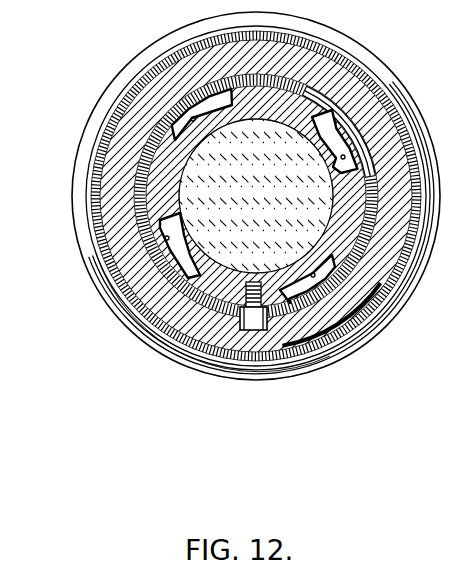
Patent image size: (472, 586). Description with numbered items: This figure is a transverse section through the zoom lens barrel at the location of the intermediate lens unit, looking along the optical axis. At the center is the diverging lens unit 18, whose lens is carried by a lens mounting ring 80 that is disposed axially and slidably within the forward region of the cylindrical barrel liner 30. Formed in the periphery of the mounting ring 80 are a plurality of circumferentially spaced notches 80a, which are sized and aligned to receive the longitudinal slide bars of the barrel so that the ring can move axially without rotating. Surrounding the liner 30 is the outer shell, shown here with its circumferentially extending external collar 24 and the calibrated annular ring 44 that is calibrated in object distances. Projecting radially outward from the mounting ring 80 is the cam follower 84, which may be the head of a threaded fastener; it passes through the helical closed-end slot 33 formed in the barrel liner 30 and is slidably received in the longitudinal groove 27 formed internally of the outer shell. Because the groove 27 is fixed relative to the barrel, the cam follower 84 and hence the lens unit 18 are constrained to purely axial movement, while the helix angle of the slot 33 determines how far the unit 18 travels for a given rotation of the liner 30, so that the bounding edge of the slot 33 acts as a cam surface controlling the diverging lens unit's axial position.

The intermediate diverging lens unit 18 is at (262, 208).
The external shoulder or collar 24 is at (103, 275).
The longitudinal groove 27 is at (273, 327).
The barrel liner 30 is at (135, 213).
The helical slot 33 is at (220, 327).
The calibrated annular ring 44 is at (147, 323).
The lens mounting ring 80 is at (152, 185).
The notches 80a is at (193, 122).
The cam follower 84 is at (252, 330).